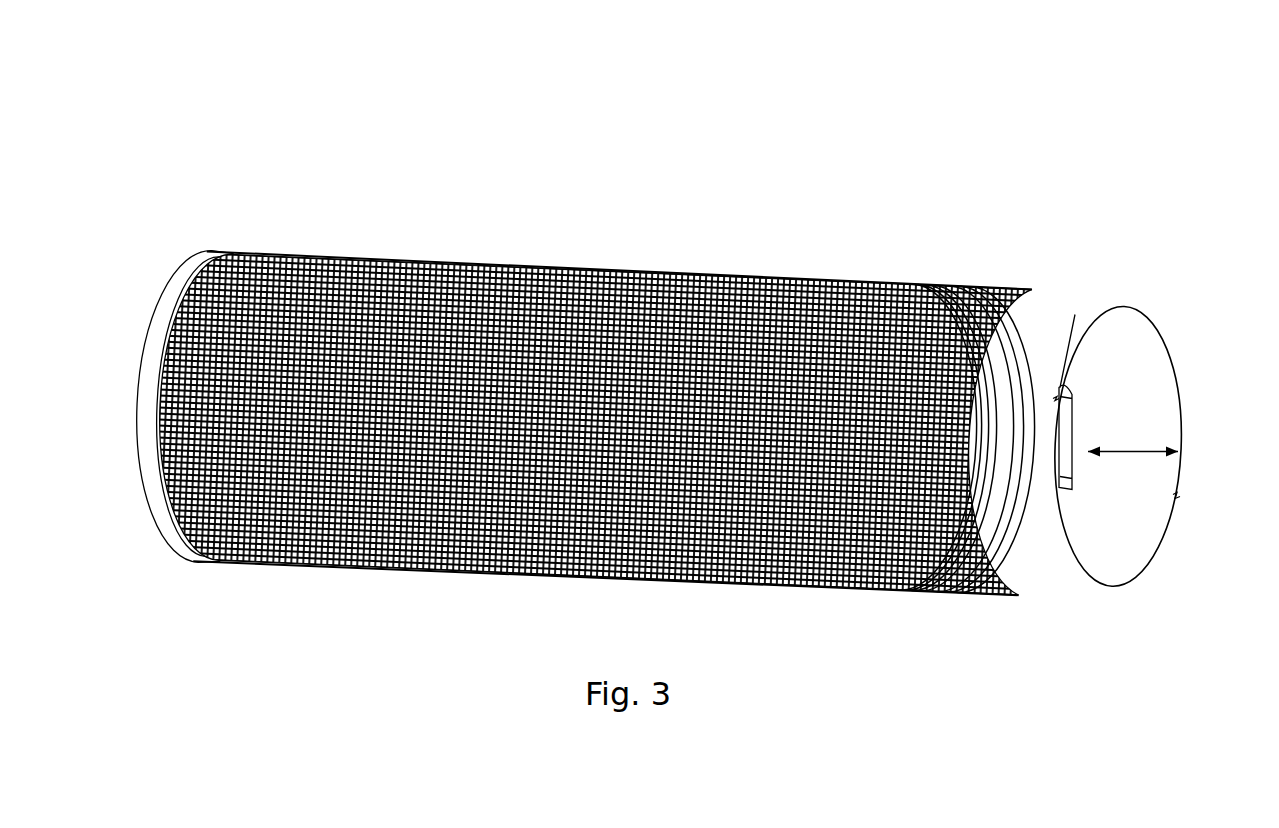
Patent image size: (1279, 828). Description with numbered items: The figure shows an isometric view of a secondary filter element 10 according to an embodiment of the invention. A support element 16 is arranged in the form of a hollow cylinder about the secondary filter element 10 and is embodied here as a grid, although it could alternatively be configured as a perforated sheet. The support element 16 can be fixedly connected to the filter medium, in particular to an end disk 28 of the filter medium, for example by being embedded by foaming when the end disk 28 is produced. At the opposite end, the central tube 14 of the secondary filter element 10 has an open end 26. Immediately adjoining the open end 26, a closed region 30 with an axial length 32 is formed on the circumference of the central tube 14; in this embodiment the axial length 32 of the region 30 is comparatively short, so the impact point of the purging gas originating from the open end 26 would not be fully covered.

The secondary filter element 10 is at (463, 108).
The central tube 14 is at (991, 402).
The support element 16 is at (596, 386).
The open end 26 is at (1160, 448).
The end disk 28 is at (144, 403).
The closed region 30 is at (1157, 413).
The axial length 32 is at (1116, 406).